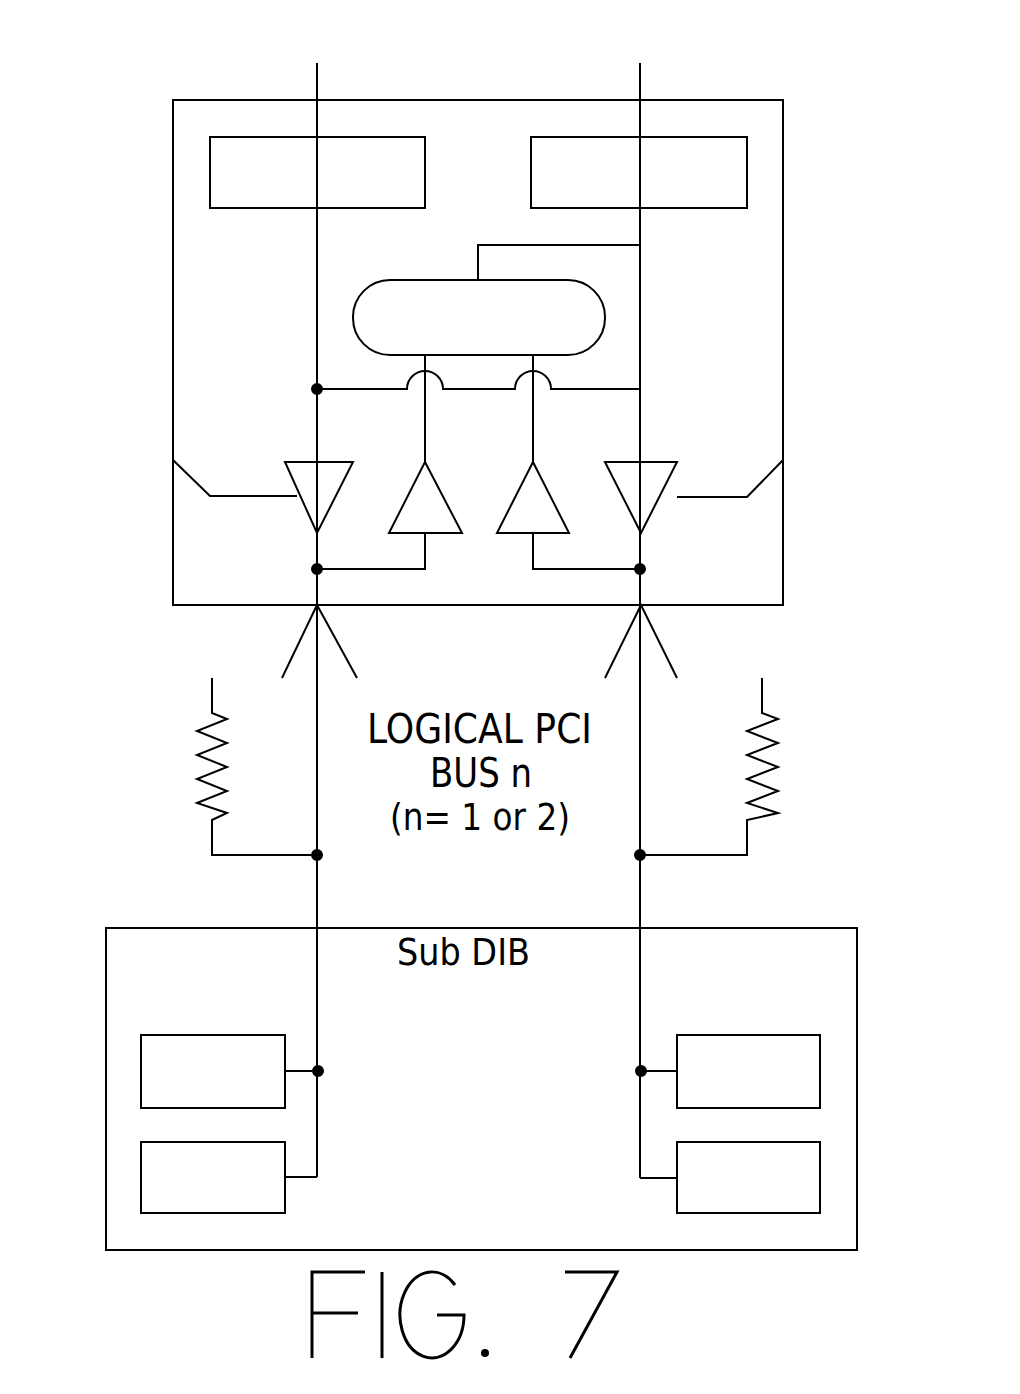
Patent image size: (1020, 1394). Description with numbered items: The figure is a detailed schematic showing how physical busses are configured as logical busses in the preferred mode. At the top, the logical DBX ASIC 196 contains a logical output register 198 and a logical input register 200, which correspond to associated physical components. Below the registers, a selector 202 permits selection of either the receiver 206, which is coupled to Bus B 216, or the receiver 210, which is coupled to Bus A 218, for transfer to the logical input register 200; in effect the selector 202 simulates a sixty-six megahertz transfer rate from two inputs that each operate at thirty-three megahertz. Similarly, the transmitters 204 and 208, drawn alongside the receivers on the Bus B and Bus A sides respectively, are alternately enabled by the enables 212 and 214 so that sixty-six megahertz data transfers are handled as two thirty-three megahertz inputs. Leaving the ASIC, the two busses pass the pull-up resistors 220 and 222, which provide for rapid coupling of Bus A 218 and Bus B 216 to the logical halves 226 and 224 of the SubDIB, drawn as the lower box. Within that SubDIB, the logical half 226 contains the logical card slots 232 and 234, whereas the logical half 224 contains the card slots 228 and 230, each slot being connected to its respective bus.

The logical DBX ASIC 196 is at (390, 100).
The logical output register 198 is at (210, 208).
The logical input register 200 is at (747, 208).
The selector 202 is at (355, 315).
The transmitter 204 is at (297, 490).
The receiver 206 is at (425, 462).
The transmitter 208 is at (677, 462).
The receiver 210 is at (533, 462).
The enable 212 is at (173, 460).
The enable 214 is at (783, 460).
The Bus B 216 is at (317, 892).
The Bus A 218 is at (641, 892).
The pull-up resistor 220 is at (197, 785).
The pull-up resistor 222 is at (773, 767).
The logical half of the SubDIB 224 is at (212, 928).
The logical half of the SubDIB 226 is at (715, 928).
The card slot 228 is at (285, 1108).
The card slot 230 is at (285, 1179).
The logical card slot 232 is at (677, 1035).
The logical card slot 234 is at (677, 1142).